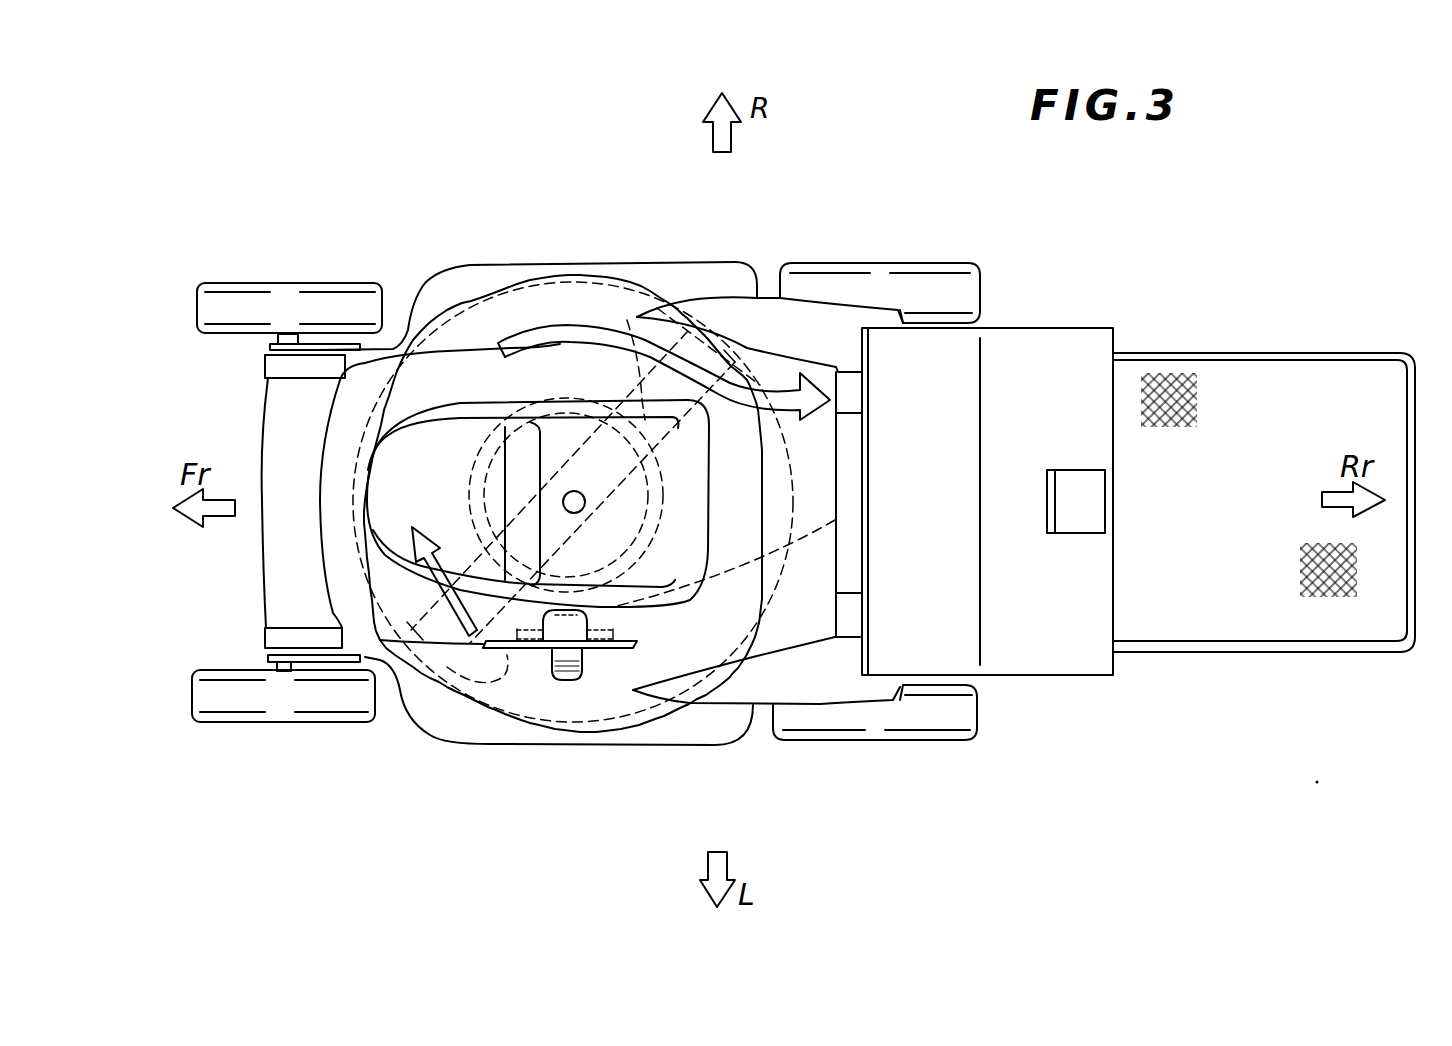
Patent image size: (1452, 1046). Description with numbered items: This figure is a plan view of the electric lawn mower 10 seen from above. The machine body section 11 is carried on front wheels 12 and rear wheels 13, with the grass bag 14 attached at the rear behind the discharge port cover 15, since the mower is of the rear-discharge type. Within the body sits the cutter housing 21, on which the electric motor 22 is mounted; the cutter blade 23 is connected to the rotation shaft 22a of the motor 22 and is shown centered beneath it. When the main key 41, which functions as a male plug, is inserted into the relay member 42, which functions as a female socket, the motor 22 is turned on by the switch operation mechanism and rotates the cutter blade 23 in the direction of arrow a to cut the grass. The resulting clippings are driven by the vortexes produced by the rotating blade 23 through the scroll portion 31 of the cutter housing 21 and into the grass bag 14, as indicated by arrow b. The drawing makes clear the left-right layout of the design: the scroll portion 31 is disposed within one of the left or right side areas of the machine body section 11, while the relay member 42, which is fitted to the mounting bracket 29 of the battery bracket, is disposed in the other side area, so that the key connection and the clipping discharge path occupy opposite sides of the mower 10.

The electric lawn mower 10 is at (354, 125).
The machine body section 11 is at (453, 243).
The front wheels 12 is at (277, 283).
The rear wheels 13 is at (876, 263).
The grass bag 14 is at (1258, 350).
The discharge port cover 15 is at (1040, 328).
The cutter housing 21 is at (625, 258).
The electric motor 22 is at (655, 533).
The rotation shaft 22a is at (586, 498).
The cutter blade 23 is at (460, 633).
The mounting bracket 29 is at (594, 650).
The scroll portion 31 is at (760, 545).
The main key 41 is at (560, 650).
The relay member 42 is at (556, 625).